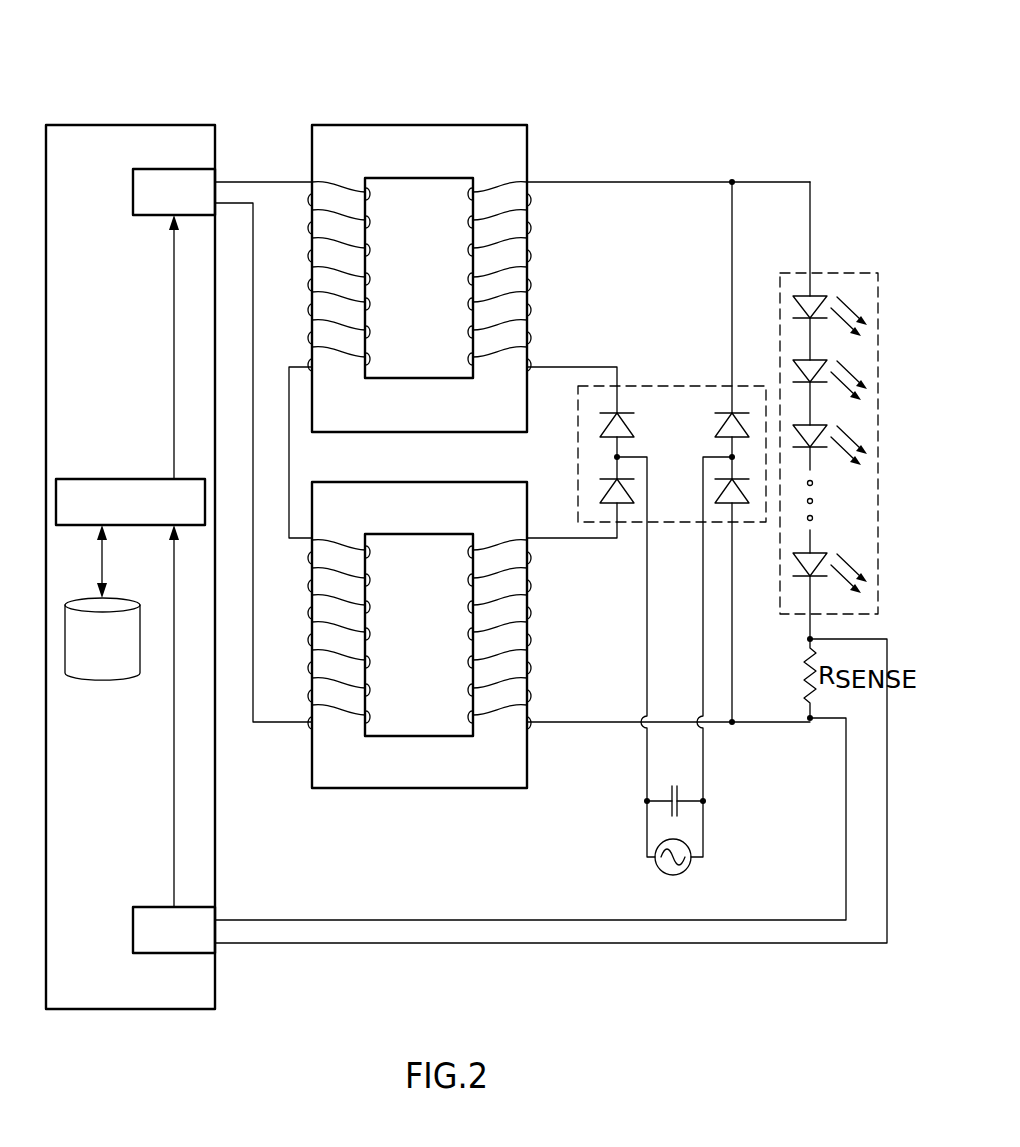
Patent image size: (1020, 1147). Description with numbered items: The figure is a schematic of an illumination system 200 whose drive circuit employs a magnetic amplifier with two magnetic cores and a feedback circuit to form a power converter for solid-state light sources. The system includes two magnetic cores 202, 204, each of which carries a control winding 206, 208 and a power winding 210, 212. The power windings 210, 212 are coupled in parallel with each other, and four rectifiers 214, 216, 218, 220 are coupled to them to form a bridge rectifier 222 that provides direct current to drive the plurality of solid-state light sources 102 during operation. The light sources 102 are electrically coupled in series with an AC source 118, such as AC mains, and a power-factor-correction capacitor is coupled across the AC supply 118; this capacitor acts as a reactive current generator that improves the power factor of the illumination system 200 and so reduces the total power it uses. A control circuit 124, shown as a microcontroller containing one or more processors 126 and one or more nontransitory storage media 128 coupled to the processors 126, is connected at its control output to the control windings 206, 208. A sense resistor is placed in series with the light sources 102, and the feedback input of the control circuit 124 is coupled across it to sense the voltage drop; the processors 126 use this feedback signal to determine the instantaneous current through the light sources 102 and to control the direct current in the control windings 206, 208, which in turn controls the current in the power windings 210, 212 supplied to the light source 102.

The illumination system 200 is at (700, 58).
The control circuit 124 is at (120, 125).
The processors 126 is at (104, 479).
The nontransitory processor- or computer-readable storage media 128 is at (104, 679).
The magnetic core 202 is at (426, 253).
The magnetic core 204 is at (426, 615).
The control winding 206 is at (340, 264).
The control winding 208 is at (340, 622).
The power winding 210 is at (505, 265).
The power winding 212 is at (505, 625).
The rectifier 214 is at (600, 421).
The rectifier 216 is at (722, 421).
The rectifier 218 is at (630, 505).
The rectifier 220 is at (740, 505).
The bridge rectifier 222 is at (653, 449).
The solid-state light sources 102 is at (836, 273).
The AC source 118 is at (690, 870).